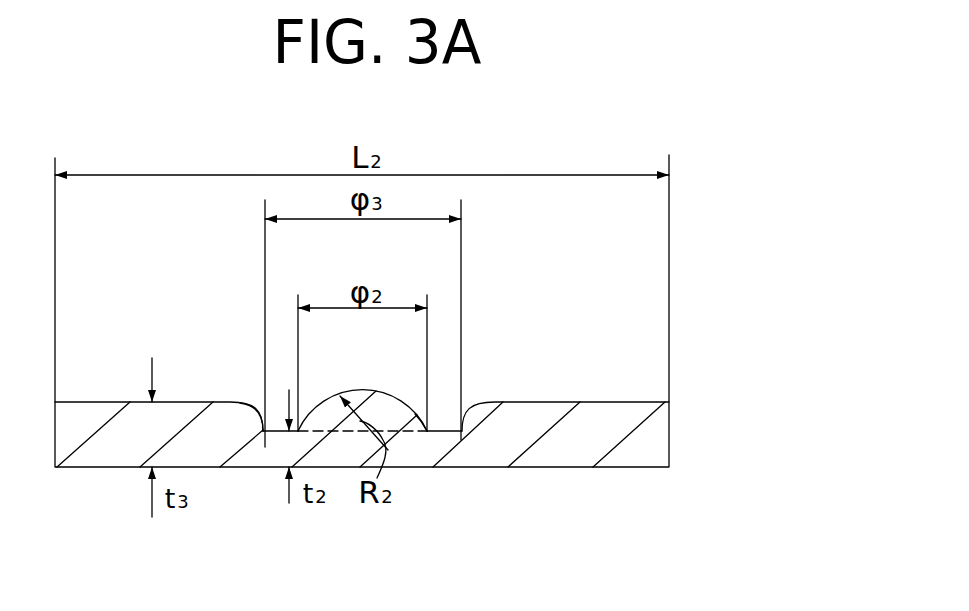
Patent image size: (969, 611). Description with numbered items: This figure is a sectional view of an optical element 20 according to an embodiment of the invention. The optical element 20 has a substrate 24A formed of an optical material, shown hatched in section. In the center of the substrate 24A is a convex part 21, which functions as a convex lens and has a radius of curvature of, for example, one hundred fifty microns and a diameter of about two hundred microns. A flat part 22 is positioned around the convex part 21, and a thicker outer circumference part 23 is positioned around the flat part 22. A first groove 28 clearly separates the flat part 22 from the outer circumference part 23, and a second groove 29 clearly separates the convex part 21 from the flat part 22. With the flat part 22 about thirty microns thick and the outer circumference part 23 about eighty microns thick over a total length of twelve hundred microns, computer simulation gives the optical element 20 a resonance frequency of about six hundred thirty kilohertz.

The optical element 20 is at (350, 114).
The convex part 21 is at (363, 388).
The flat part 22 is at (441, 430).
The outer circumference part 23 is at (560, 401).
The substrate 24A is at (658, 438).
The first groove 28 is at (263, 433).
The second groove 29 is at (428, 434).